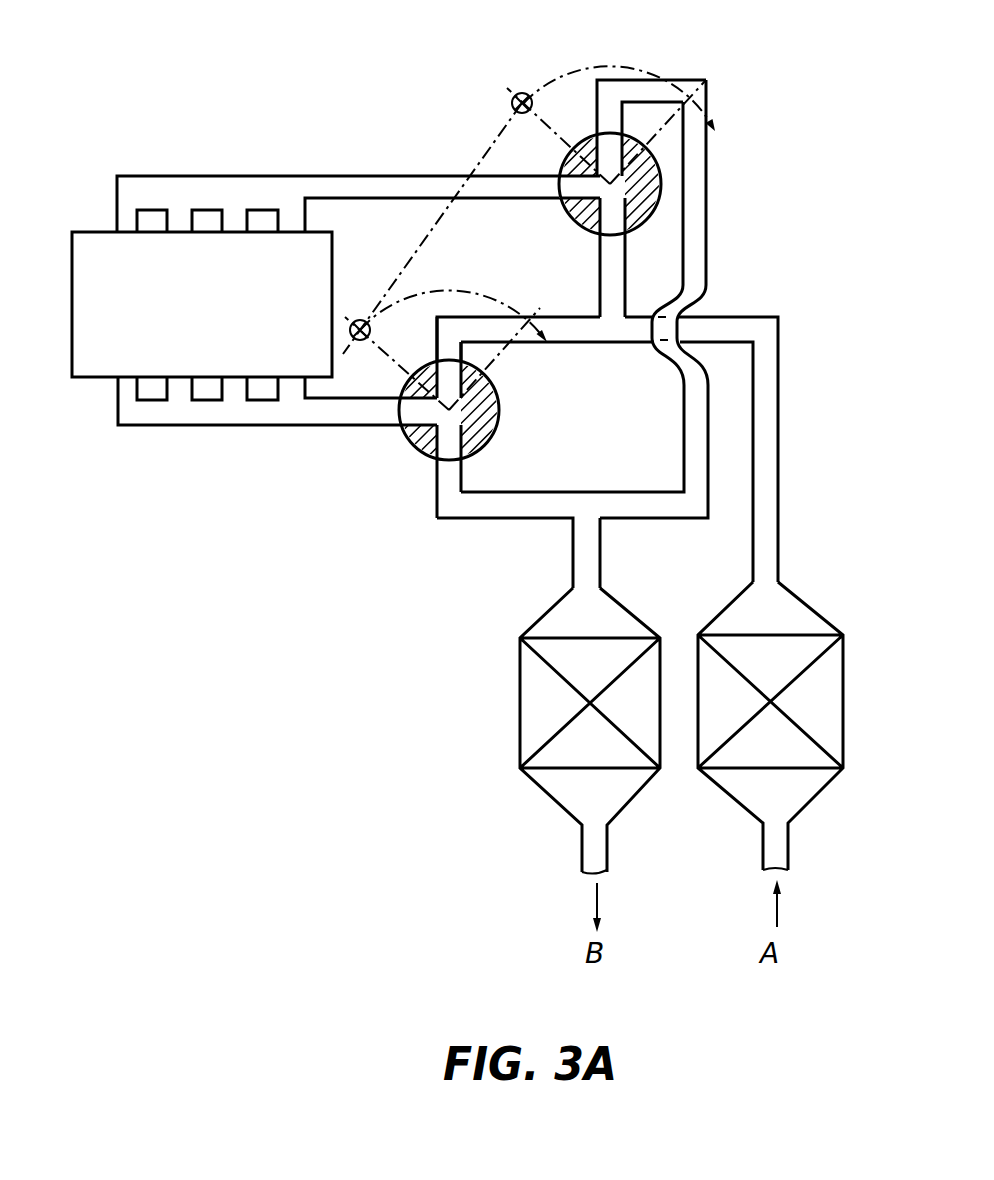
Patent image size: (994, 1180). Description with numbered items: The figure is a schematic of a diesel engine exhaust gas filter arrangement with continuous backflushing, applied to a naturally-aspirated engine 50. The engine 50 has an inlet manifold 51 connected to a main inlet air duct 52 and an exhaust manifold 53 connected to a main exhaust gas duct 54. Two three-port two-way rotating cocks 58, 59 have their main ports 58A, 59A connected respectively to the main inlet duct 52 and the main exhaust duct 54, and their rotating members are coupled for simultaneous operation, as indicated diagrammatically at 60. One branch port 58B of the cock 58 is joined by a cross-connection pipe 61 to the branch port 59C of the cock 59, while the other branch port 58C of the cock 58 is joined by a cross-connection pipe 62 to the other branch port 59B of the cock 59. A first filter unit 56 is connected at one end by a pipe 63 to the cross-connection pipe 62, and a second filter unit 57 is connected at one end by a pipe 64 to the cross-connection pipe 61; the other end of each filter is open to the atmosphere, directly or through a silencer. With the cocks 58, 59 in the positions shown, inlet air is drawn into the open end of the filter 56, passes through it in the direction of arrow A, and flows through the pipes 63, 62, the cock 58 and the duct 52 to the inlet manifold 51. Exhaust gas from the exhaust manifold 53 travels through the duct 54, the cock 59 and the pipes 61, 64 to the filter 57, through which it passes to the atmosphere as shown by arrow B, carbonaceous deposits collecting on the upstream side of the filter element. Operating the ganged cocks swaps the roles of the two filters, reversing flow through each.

The engine 50 is at (93, 365).
The inlet manifold 51 is at (178, 205).
The main inlet air duct 52 is at (373, 183).
The exhaust manifold 53 is at (182, 395).
The main exhaust gas duct 54 is at (305, 425).
The filter unit 56 is at (737, 617).
The filter unit 57 is at (533, 695).
The rotating cock 58 is at (570, 225).
The main port 58A is at (560, 183).
The branch port 58B is at (610, 137).
The branch port 58C is at (613, 237).
The rotating cock 59 is at (500, 413).
The main port 59A is at (403, 410).
The branch port 59B is at (447, 360).
The branch port 59C is at (450, 453).
The coupling of rotating members 60 is at (392, 290).
The cross-connection pipe 61 is at (700, 213).
The cross-connection pipe 62 is at (563, 347).
The pipe 63 is at (782, 500).
The pipe 64 is at (580, 545).